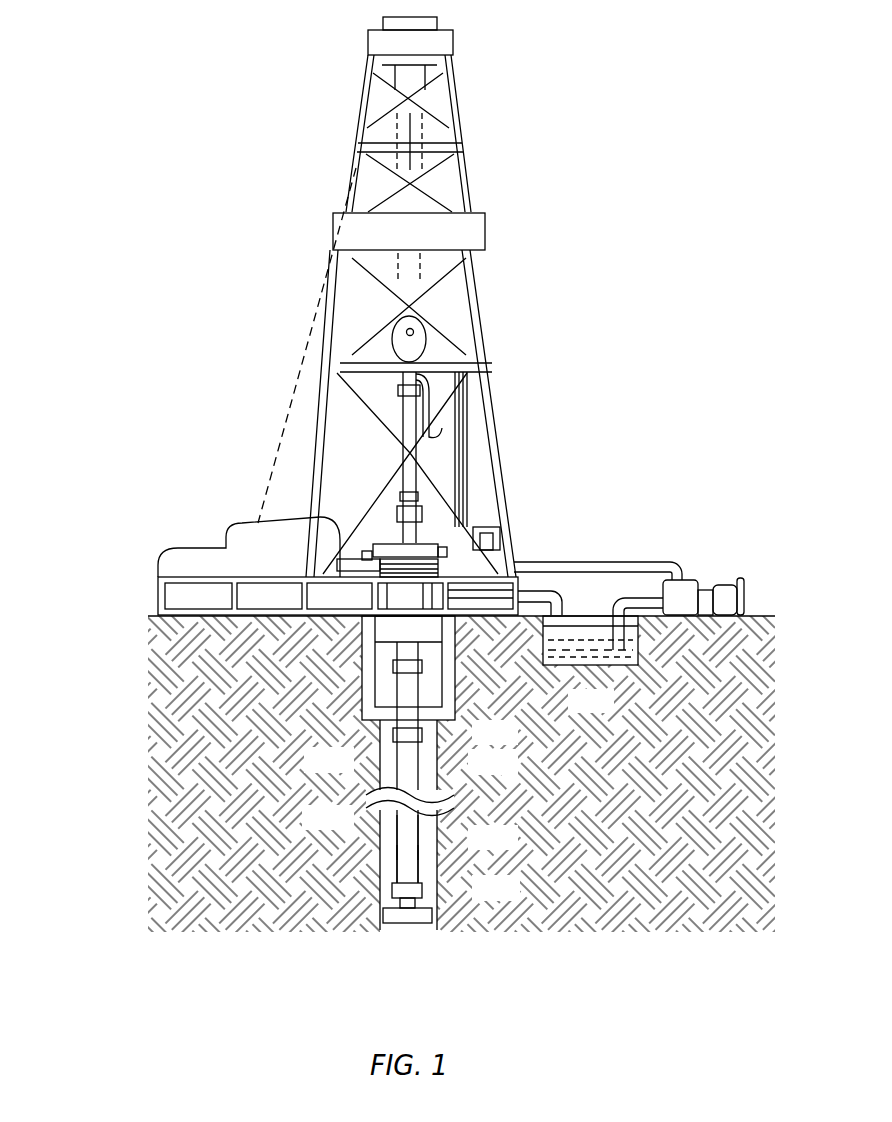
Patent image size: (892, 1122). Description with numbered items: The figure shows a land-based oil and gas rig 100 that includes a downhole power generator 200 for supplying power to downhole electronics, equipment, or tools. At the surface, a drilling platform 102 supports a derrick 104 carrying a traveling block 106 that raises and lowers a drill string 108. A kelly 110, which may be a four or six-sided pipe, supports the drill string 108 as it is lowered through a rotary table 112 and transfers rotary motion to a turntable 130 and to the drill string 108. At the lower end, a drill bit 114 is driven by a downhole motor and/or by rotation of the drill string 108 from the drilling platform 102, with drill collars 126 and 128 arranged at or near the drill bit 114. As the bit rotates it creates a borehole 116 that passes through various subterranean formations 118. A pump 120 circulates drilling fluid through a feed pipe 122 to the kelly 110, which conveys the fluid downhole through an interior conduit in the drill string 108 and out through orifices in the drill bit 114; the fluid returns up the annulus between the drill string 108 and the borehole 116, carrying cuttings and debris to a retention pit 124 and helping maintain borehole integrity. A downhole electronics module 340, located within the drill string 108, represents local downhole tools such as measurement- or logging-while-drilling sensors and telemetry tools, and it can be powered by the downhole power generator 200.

The land-based oil and gas rig 100 is at (144, 97).
The drilling platform 102 is at (158, 580).
The derrick 104 is at (470, 175).
The traveling block 106 is at (435, 312).
The kelly 110 is at (487, 354).
The turntable 130 is at (432, 470).
The rotary table 112 is at (463, 532).
The feed pipe 122 is at (612, 562).
The pump 120 is at (681, 580).
The retention pit 124 is at (587, 660).
The drill collar 126 is at (422, 734).
The borehole 116 is at (380, 768).
The drill string 108 is at (412, 765).
The downhole power generator 200 is at (410, 840).
The downhole electronics module 340 is at (408, 860).
The drill collar 128 is at (421, 889).
The drill bit 114 is at (415, 917).
The subterranean formations 118 is at (694, 829).